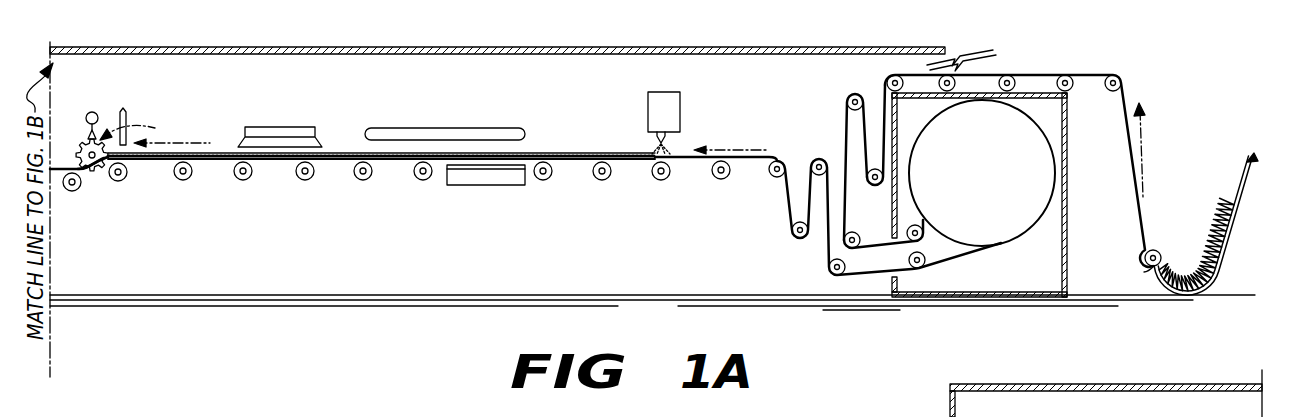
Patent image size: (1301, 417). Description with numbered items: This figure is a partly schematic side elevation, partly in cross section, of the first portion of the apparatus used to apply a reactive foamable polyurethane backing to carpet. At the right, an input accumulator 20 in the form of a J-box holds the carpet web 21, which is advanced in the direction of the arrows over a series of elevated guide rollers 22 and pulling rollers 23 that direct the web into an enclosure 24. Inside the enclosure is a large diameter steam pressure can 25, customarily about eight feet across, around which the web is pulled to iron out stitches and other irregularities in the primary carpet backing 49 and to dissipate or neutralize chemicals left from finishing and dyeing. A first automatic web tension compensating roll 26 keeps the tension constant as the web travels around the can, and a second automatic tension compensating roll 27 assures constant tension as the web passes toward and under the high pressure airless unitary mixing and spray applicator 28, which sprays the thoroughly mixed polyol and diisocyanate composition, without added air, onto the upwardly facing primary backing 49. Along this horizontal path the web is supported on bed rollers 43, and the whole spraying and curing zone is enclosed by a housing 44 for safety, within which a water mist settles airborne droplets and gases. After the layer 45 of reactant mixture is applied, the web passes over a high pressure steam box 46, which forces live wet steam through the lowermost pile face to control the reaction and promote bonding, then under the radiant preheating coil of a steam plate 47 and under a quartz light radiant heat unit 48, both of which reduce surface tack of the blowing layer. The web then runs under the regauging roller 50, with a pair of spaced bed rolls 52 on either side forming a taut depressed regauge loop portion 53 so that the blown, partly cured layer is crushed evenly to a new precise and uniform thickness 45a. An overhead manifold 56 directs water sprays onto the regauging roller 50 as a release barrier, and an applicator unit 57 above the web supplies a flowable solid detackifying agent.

The input accumulator 20 is at (1223, 258).
The carpet web 21 is at (1208, 231).
The elevated guide rollers 22 is at (1018, 82).
The pulling rollers 23 is at (772, 176).
The enclosure 24 is at (1068, 228).
The steam pressure can 25 is at (1008, 230).
The first automatic web tension compensating roll 26 is at (882, 178).
The second automatic tension compensating roll 27 is at (793, 237).
The high pressure airless unitary mixing and spray applicator 28 is at (682, 107).
The bed rollers 43 is at (299, 177).
The housing 44 is at (402, 57).
The backing layer 45 is at (583, 152).
The new precise and uniform thickness 45a is at (58, 166).
The high pressure steam box 46 is at (490, 180).
The steam plate 47 is at (465, 133).
The quartz light radiant heat unit 48 is at (293, 128).
The primary carpet backing 49 is at (680, 156).
The regauging roller 50 is at (79, 147).
The bed rolls 52 is at (72, 191).
The regauge loop portion 53 is at (91, 176).
The overhead manifold 56 is at (97, 113).
The applicator unit 57 is at (127, 127).